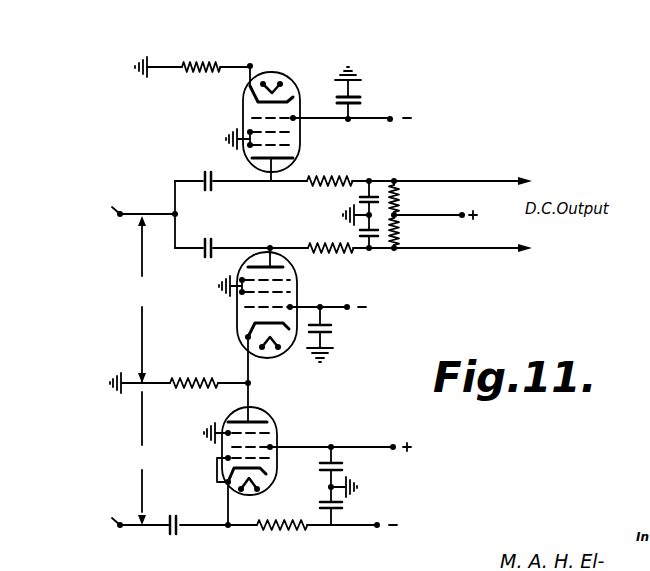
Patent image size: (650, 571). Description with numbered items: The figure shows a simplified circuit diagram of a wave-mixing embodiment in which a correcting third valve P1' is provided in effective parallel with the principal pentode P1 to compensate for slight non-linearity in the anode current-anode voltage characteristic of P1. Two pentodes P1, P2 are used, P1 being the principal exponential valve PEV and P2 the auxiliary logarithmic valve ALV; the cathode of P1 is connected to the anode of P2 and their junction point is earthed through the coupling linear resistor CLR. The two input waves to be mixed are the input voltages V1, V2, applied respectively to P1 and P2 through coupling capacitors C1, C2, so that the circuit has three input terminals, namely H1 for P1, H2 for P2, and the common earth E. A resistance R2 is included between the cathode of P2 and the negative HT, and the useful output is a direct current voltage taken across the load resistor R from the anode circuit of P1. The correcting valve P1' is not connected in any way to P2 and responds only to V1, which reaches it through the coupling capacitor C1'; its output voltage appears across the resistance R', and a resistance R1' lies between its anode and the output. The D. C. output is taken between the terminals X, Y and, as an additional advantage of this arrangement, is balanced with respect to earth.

The correcting third valve P1' is at (275, 126).
The pentode P1 is at (268, 303).
The pentode P2 is at (254, 451).
The coupling capacitor C1' is at (241, 192).
The coupling capacitor C1 is at (241, 263).
The coupling capacitor C2 is at (195, 540).
The resistance R1' is at (326, 193).
The resistance R' is at (403, 198).
The load resistor R is at (401, 231).
The resistance R2 is at (302, 539).
The coupling linear resistor CLR is at (209, 372).
The input terminal H1 is at (129, 216).
The input terminal H2 is at (126, 527).
The common earth terminal E is at (128, 383).
The input voltage V1 is at (139, 299).
The input voltage V2 is at (138, 458).
The output terminal X is at (525, 182).
The output terminal Y is at (525, 250).
The principal exponential valve PEV is at (224, 344).
The auxiliary logarithmic valve ALV is at (197, 500).